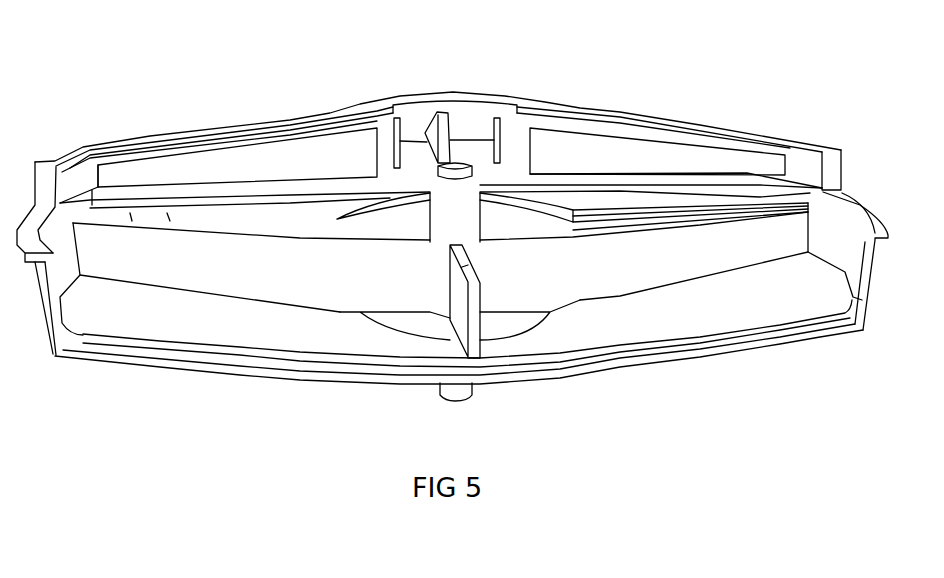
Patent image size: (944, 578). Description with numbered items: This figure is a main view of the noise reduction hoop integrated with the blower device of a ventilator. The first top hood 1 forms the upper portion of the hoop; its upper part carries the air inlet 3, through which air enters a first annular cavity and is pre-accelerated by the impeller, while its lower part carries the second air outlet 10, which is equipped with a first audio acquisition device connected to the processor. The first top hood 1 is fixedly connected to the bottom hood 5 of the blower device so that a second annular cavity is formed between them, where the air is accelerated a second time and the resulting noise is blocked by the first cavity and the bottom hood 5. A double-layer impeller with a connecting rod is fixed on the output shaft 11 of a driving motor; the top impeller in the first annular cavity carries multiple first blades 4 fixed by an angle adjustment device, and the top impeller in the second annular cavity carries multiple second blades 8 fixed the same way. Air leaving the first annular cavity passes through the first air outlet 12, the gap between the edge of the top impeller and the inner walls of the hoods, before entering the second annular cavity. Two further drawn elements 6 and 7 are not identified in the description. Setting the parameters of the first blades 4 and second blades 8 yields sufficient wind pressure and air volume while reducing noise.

The first top hood 1 is at (345, 110).
The air inlet 3 is at (483, 105).
The first blades 4 is at (630, 147).
The bottom hood 5 is at (852, 240).
The inner wall 6 is at (790, 270).
The partition plate 7 is at (757, 182).
The second blades 8 is at (557, 293).
The second air outlet 10 is at (337, 216).
The output shaft 11 is at (455, 390).
The first air outlet 12 is at (82, 183).